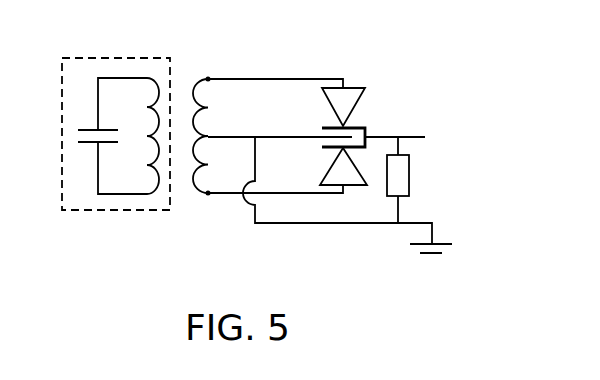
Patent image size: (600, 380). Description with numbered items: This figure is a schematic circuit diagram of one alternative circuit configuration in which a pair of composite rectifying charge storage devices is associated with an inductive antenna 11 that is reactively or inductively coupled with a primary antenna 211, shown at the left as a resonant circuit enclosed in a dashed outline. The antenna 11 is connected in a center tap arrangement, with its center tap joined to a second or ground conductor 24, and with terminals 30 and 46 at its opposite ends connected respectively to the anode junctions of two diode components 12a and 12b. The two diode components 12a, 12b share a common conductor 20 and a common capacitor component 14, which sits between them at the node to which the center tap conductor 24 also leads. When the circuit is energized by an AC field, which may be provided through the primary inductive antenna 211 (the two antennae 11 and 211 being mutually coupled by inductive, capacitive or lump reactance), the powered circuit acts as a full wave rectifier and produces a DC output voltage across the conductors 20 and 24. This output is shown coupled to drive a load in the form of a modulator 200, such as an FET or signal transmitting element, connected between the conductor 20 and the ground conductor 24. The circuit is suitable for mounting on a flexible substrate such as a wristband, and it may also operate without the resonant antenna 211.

The primary antenna 211 is at (80, 210).
The terminal 30 is at (208, 79).
The antenna 11 is at (197, 187).
The terminal 46 is at (208, 193).
The ground conductor 24 is at (282, 134).
The diode component 12a is at (353, 95).
The diode component 12b is at (333, 168).
The capacitor component 14 is at (322, 128).
The common conductor 20 is at (407, 137).
The modulator 200 is at (403, 172).